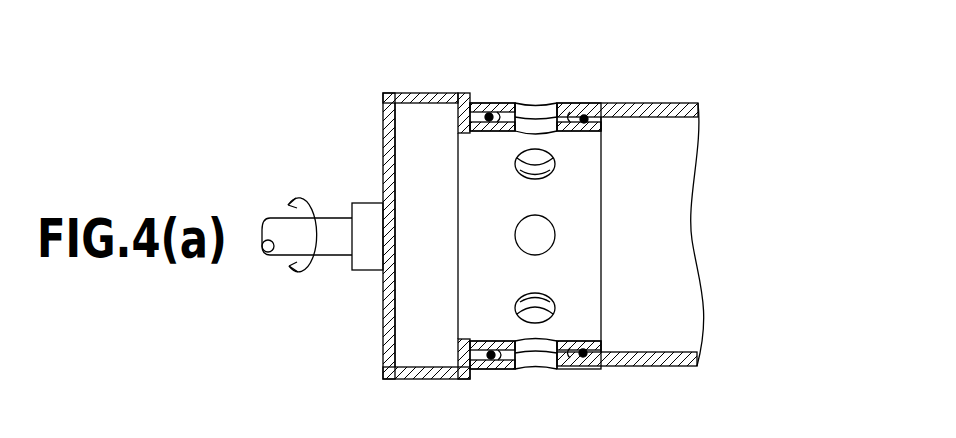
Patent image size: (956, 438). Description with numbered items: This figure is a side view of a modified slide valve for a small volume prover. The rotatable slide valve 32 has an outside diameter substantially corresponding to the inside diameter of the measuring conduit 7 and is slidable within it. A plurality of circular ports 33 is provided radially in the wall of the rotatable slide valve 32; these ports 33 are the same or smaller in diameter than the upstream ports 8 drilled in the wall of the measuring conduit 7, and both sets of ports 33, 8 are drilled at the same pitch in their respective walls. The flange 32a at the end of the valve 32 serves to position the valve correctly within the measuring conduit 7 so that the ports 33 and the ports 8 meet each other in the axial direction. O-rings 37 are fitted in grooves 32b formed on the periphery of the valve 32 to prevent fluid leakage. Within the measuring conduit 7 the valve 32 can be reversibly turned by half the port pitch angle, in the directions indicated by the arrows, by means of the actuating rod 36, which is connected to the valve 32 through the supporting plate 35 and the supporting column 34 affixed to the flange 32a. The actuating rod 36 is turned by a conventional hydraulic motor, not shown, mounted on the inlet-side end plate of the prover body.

The measuring conduit 7 is at (655, 103).
The upstream ports 8 is at (537, 110).
The rotatable slide valve 32 is at (498, 104).
The flange 32a is at (463, 93).
The groove 32b is at (577, 118).
The circular port 33 is at (554, 238).
The supporting column 34 is at (417, 92).
The supporting plate 35 is at (388, 115).
The actuating rod 36 is at (333, 235).
The O-rings 37 is at (581, 357).